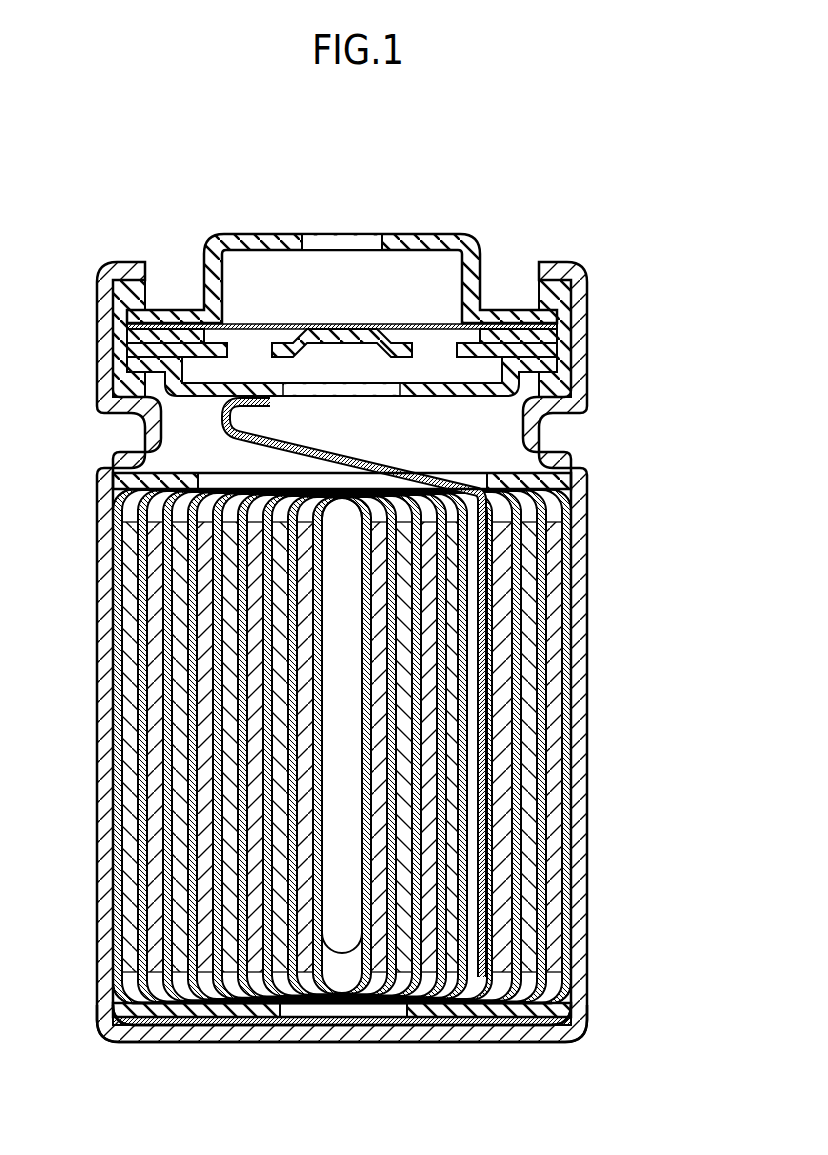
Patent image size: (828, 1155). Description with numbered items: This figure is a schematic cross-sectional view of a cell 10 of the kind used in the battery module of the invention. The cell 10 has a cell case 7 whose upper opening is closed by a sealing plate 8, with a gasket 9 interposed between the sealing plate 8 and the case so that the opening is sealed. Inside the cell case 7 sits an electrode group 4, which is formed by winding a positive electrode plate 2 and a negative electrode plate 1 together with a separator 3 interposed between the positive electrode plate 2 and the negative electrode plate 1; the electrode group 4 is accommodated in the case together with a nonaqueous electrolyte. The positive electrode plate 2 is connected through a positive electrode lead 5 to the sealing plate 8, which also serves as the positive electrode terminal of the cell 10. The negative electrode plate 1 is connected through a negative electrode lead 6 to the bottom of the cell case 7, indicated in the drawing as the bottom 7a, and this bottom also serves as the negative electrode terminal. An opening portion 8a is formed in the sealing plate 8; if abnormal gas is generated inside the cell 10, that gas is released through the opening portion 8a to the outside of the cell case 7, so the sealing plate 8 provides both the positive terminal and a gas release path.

The negative electrode plate 1 is at (557, 733).
The positive electrode plate 2 is at (532, 763).
The separator 3 is at (570, 700).
The electrode group 4 is at (410, 747).
The positive electrode lead 5 is at (228, 445).
The negative electrode lead 6 is at (377, 1026).
The cell case 7 is at (97, 668).
The bottom of battery case 7a is at (272, 1043).
The sealing plate 8 is at (418, 244).
The opening portion 8a is at (343, 246).
The gasket 9 is at (571, 292).
The cell 10 is at (375, 608).